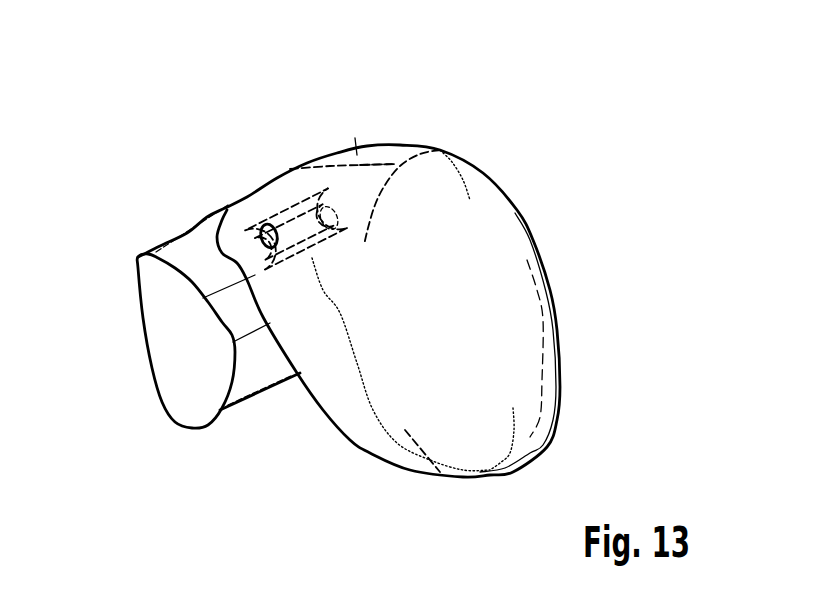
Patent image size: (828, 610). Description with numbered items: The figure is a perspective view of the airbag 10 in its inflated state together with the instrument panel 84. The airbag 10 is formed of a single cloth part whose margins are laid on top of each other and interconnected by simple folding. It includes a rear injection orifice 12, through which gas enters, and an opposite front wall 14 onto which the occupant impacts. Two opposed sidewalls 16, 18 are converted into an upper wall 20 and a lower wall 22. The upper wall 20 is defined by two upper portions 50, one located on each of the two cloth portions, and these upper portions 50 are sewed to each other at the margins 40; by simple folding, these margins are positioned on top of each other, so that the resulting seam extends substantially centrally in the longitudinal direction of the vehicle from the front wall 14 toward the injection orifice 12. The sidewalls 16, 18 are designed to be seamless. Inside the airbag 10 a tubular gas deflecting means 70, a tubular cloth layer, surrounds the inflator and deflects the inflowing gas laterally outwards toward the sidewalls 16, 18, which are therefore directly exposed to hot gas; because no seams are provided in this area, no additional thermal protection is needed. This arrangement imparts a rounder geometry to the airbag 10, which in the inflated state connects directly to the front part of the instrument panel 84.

The airbag 10 is at (539, 118).
The rear injection orifice 12 is at (278, 208).
The front wall 14 is at (497, 248).
The sidewall 16 is at (330, 387).
The sidewall 18 is at (557, 310).
The upper wall 20 is at (349, 118).
The lower wall 22 is at (467, 498).
The margins 40 is at (365, 163).
The upper portions 50 is at (360, 180).
The tubular gas deflecting means 70 is at (307, 220).
The instrument panel 84 is at (232, 315).